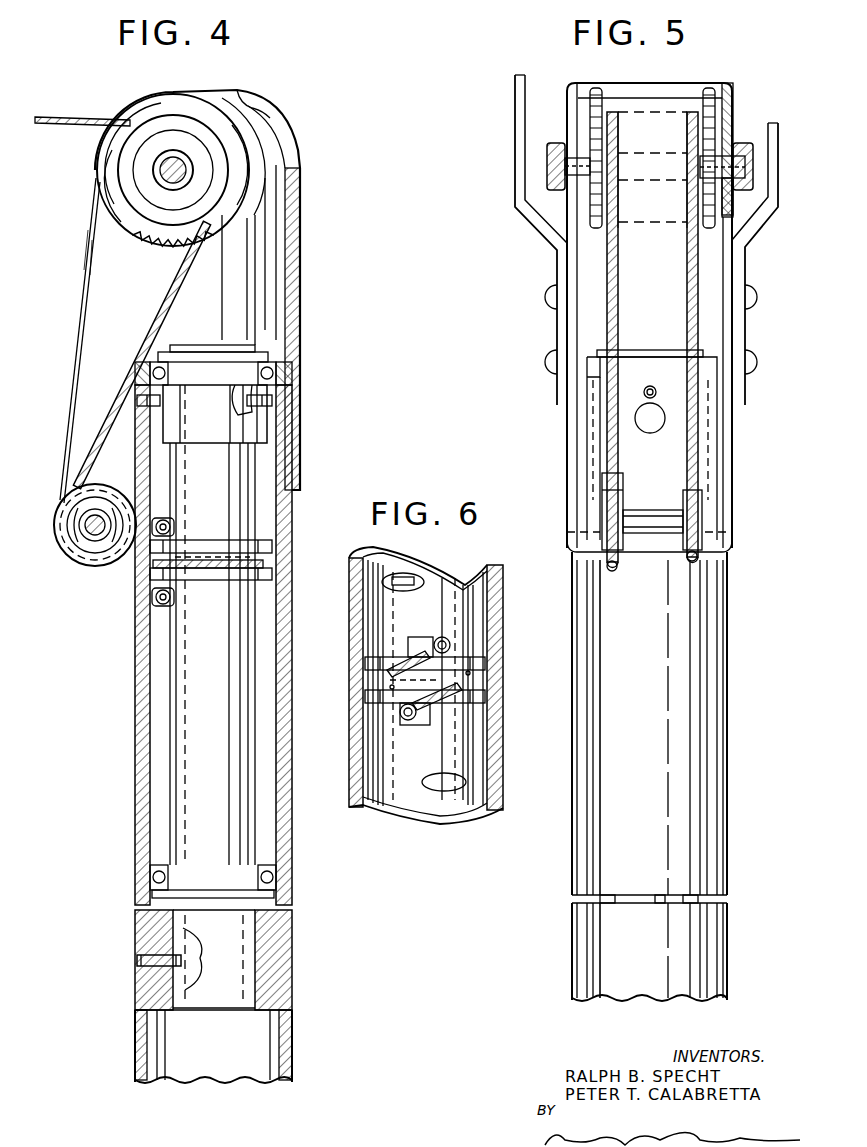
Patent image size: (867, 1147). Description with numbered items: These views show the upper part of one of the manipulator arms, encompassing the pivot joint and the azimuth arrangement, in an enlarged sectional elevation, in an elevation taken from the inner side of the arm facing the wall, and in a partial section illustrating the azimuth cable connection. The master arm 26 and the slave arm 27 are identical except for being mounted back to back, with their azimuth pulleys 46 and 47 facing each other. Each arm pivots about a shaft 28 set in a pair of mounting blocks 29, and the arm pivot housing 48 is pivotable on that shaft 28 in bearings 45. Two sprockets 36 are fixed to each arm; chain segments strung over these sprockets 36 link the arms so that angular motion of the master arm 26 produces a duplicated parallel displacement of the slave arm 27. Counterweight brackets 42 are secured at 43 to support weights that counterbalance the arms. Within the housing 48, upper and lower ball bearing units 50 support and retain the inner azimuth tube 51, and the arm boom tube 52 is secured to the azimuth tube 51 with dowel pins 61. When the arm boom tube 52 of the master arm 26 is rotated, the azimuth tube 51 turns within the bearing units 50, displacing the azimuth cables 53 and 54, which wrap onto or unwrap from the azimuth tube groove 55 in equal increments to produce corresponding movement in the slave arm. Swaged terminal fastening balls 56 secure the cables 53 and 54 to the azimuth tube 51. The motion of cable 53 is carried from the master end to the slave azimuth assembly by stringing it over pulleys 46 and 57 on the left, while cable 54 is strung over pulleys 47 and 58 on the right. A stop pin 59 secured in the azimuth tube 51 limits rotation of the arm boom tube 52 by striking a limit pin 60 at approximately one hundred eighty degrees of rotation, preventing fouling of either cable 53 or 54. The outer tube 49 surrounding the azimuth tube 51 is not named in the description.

In FIG. 5, the master arm 26 is at (620, 735).
In FIG. 5, the slave arm 27 is at (620, 734).
In FIG. 4, the shaft 28 is at (162, 172).
In FIG. 5, the shaft 28 is at (553, 171).
In FIG. 5, the mounting blocks 29 is at (742, 148).
In FIG. 4, the sprockets 36 is at (146, 240).
In FIG. 5, the sprockets 36 is at (597, 228).
In FIG. 5, the counterweight brackets 42 is at (515, 178).
In FIG. 5, the bracket securing points 43 is at (548, 345).
In FIG. 5, the bearings 45 is at (724, 184).
In FIG. 4, the azimuth pulley 46 is at (70, 548).
In FIG. 5, the azimuth pulley 46 is at (606, 494).
In FIG. 5, the azimuth pulley 47 is at (699, 504).
In FIG. 4, the arm pivot housing 48 is at (296, 212).
In FIG. 5, the arm pivot housing 48 is at (568, 440).
In FIG. 4, the outer tube 49 is at (288, 530).
In FIG. 6, the outer tube 49 is at (490, 750).
In FIG. 5, the outer tube 49 is at (717, 808).
In FIG. 4, the ball bearing units 50 is at (280, 360).
In FIG. 4, the inner azimuth tube 51 is at (172, 782).
In FIG. 6, the inner azimuth tube 51 is at (463, 616).
In FIG. 4, the arm boom tube 52 is at (288, 1058).
In FIG. 5, the arm boom tube 52 is at (718, 932).
In FIG. 4, the azimuth cable 53 is at (166, 303).
In FIG. 6, the azimuth cable 53 is at (455, 693).
In FIG. 5, the azimuth cable 53 is at (615, 296).
In FIG. 6, the azimuth cable 54 is at (372, 678).
In FIG. 5, the azimuth cable 54 is at (690, 312).
In FIG. 4, the azimuth tube groove 55 is at (262, 562).
In FIG. 6, the azimuth tube groove 55 is at (478, 681).
In FIG. 4, the swaged terminal fastening balls 56 is at (153, 568).
In FIG. 6, the swaged terminal fastening balls 56 is at (441, 637).
In FIG. 5, the pulley 57 is at (619, 195).
In FIG. 5, the pulley 58 is at (686, 209).
In FIG. 4, the stop pin 59 is at (270, 398).
In FIG. 4, the limit pin 60 is at (137, 400).
In FIG. 5, the limit pin 60 is at (651, 386).
In FIG. 4, the dowel pins 61 is at (150, 960).